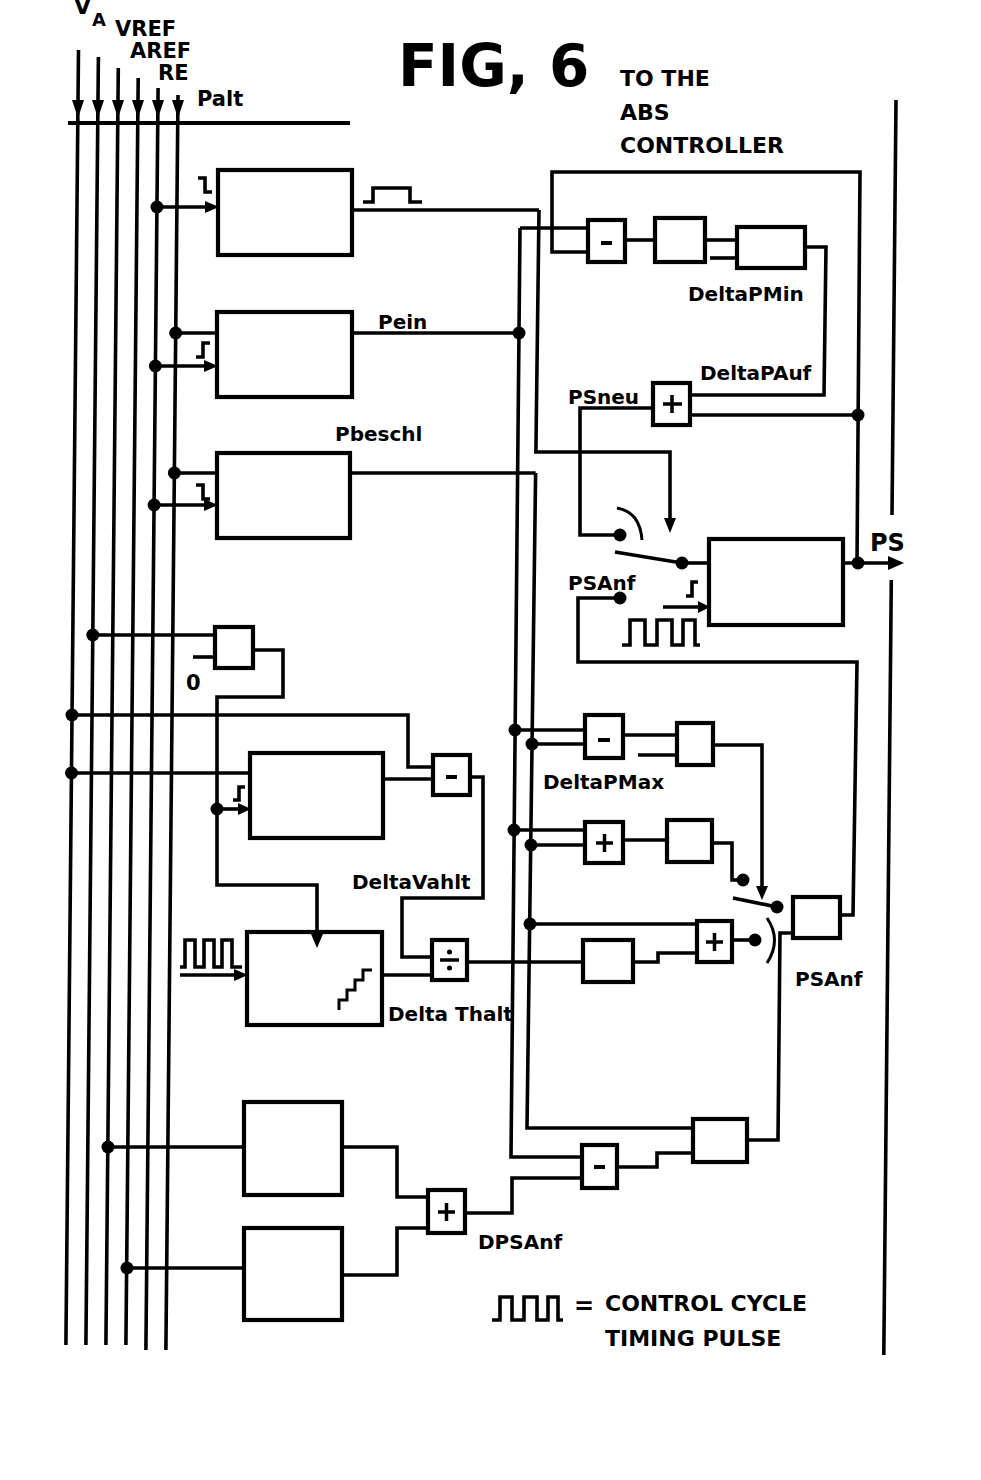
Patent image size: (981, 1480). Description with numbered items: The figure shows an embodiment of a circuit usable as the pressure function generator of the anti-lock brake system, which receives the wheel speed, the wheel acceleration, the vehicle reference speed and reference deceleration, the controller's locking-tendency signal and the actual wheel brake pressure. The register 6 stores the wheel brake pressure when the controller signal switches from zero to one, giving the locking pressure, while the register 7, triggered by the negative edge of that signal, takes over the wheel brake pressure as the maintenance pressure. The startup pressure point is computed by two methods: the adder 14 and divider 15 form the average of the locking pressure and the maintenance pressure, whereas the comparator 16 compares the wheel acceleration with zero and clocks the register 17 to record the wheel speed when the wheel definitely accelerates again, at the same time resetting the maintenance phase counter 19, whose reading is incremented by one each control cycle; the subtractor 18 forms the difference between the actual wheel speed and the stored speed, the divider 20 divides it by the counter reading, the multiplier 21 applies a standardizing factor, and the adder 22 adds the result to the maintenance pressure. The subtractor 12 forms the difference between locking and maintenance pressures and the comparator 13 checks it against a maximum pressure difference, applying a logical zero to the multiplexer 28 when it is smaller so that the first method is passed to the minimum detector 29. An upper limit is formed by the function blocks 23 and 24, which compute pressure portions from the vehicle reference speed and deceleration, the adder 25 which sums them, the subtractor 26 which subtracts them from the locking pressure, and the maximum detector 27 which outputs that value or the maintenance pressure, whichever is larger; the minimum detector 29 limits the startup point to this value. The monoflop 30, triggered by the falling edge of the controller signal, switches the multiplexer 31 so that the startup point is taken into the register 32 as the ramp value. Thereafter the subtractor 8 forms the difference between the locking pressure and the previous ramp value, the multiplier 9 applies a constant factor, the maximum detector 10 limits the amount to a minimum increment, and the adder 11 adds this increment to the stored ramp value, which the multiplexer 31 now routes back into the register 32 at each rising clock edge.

The register 6 is at (259, 309).
The register 7 is at (245, 433).
The subtractor 8 is at (617, 220).
The multiplier 9 is at (685, 218).
The maximum detector 10 is at (777, 224).
The adder 11 is at (655, 392).
The subtractor 12 is at (622, 713).
The comparator 13 is at (710, 702).
The adder 14 is at (622, 819).
The divider 15 is at (711, 819).
The comparator 16 is at (216, 634).
The register 17 is at (297, 753).
The subtractor 18 is at (470, 755).
The maintenance phase counter 19 is at (295, 924).
The divider 20 is at (469, 931).
The multiplier 21 is at (582, 979).
The adder 22 is at (727, 917).
The function block 23 is at (287, 1101).
The function block 24 is at (287, 1227).
The adder 25 is at (464, 1189).
The subtractor 26 is at (584, 1190).
The maximum detector 27 is at (727, 1118).
The multiplexer 28 is at (758, 957).
The minimum detector 29 is at (838, 894).
The monoflop 30 is at (263, 164).
The multiplexer 31 is at (634, 535).
The register 32 is at (757, 534).